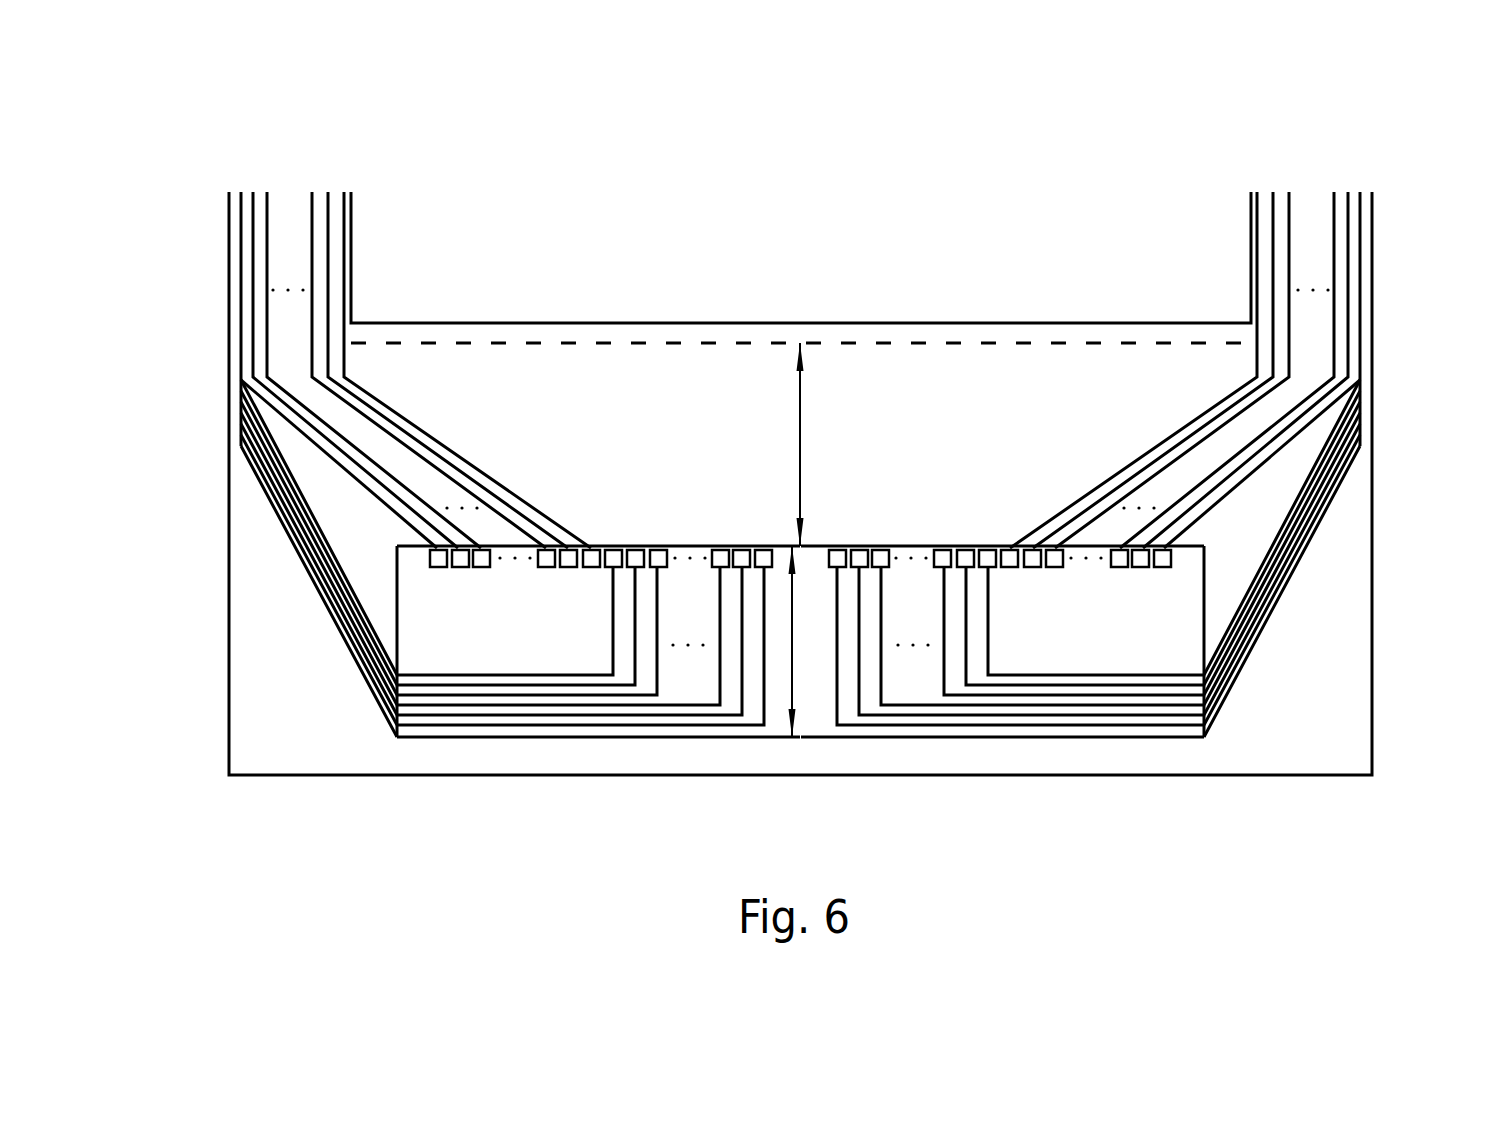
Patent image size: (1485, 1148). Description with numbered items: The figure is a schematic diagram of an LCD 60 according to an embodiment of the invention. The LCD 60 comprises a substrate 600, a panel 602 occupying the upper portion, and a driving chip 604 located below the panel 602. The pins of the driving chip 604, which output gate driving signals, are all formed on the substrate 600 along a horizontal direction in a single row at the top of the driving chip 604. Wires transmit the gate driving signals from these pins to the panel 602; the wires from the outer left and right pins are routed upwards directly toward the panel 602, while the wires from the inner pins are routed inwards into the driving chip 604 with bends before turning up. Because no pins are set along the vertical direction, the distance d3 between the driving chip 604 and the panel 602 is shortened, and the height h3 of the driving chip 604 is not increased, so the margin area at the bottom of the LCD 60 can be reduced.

The LCD 60 is at (1258, 124).
The substrate 600 is at (263, 730).
The panel 602 is at (768, 231).
The driving chip 604 is at (392, 637).
The distance between the driving chip and the panel d3 is at (803, 417).
The height of the driving chip h3 is at (793, 613).